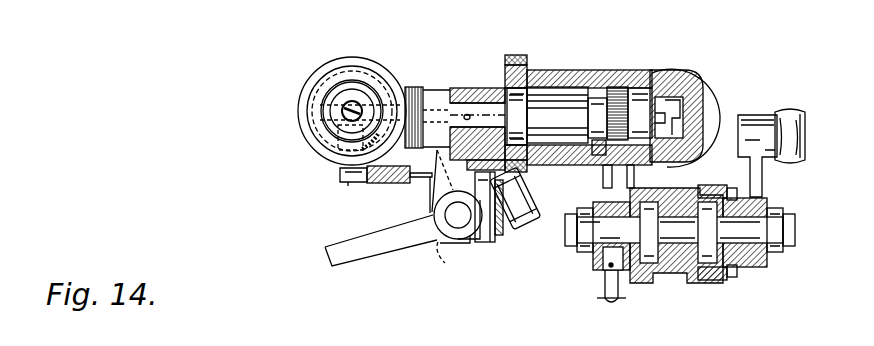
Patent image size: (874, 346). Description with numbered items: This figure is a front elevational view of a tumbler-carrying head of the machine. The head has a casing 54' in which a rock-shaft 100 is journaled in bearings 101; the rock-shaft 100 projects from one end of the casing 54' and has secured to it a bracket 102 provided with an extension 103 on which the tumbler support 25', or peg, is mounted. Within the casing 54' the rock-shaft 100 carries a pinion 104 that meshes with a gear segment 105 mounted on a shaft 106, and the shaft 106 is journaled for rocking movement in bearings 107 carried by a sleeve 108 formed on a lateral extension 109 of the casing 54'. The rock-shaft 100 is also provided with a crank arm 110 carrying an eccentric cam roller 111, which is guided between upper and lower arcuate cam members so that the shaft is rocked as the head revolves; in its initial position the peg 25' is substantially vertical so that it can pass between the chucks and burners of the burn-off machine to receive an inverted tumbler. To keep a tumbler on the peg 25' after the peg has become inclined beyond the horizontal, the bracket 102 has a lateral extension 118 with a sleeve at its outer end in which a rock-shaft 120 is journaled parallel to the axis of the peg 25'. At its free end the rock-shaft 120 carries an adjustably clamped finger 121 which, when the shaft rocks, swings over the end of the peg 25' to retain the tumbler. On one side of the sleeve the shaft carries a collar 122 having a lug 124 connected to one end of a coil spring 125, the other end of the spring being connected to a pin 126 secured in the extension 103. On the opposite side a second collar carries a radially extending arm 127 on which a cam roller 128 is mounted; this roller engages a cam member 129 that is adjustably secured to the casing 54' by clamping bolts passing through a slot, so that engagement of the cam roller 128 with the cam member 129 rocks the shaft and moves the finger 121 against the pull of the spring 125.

The tumbler support 25' is at (352, 107).
The casing 54' is at (605, 86).
The rock-shaft 100 is at (553, 113).
The bearings 101 is at (540, 87).
The bracket 102 is at (472, 89).
The extension 103 is at (425, 77).
The pinion 104 is at (620, 108).
The gear segment 105 is at (610, 184).
The shaft 106 is at (592, 245).
The bearings 107 is at (707, 234).
The sleeve 108 is at (680, 270).
The lateral extension 109 is at (688, 175).
The crank arm 110 is at (752, 194).
The eccentric cam roller 111 is at (787, 120).
The lateral extension 118 is at (468, 178).
The rock-shaft 120 is at (457, 215).
The finger 121 is at (345, 254).
The collar 122 is at (454, 260).
The lug 124 is at (433, 185).
The coil spring 125 is at (388, 178).
The pin 126 is at (344, 178).
The radially extending arm 127 is at (502, 230).
The cam roller 128 is at (521, 222).
The cam member 129 is at (520, 66).